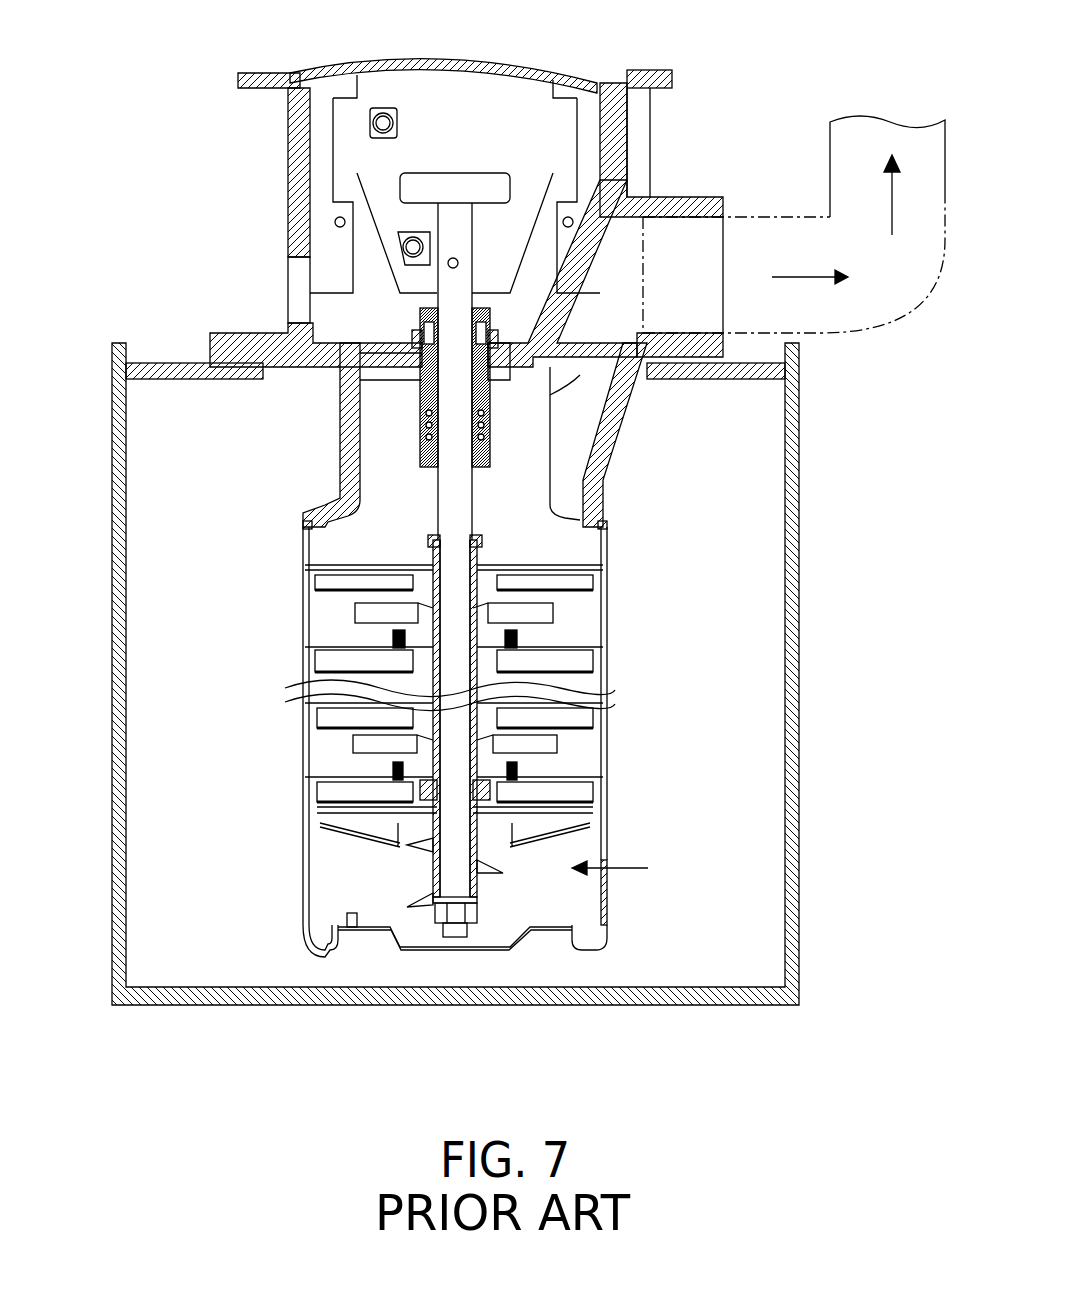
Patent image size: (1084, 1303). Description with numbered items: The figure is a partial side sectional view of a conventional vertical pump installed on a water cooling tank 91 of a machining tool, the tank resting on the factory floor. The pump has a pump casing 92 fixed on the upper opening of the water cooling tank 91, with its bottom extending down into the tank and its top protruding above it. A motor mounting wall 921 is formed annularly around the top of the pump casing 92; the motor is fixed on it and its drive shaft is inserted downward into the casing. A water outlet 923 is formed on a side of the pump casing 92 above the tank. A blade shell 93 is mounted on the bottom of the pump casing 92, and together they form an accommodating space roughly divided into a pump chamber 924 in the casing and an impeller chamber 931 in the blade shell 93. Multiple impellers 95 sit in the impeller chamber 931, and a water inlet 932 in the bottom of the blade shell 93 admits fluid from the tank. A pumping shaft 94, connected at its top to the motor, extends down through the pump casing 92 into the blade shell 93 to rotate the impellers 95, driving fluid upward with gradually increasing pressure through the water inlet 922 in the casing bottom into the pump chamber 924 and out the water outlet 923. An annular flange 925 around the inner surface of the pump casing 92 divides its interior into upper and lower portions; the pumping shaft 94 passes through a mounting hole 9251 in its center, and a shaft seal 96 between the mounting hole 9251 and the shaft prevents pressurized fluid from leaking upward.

The water cooling tank 91 is at (113, 420).
The pump casing 92 is at (200, 248).
The motor mounting wall 921 is at (262, 73).
The water inlet 922 is at (525, 510).
The water outlet 923 is at (722, 233).
The pump chamber 924 is at (533, 457).
The annular flange 925 is at (243, 342).
The mounting hole 9251 is at (498, 382).
The blade shell 93 is at (300, 867).
The impeller chamber 931 is at (327, 753).
The water inlet 932 is at (620, 893).
The pumping shaft 94 is at (447, 515).
The impellers 95 is at (363, 617).
The shaft seal 96 is at (405, 417).